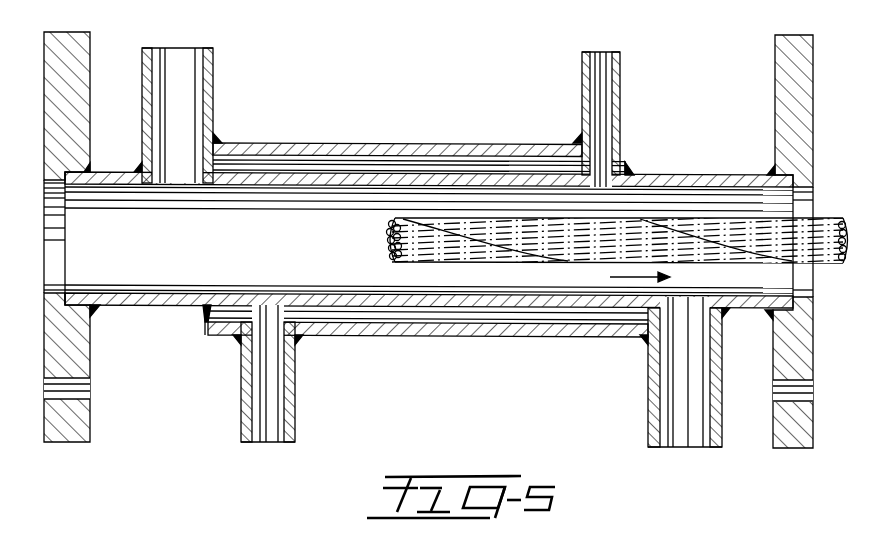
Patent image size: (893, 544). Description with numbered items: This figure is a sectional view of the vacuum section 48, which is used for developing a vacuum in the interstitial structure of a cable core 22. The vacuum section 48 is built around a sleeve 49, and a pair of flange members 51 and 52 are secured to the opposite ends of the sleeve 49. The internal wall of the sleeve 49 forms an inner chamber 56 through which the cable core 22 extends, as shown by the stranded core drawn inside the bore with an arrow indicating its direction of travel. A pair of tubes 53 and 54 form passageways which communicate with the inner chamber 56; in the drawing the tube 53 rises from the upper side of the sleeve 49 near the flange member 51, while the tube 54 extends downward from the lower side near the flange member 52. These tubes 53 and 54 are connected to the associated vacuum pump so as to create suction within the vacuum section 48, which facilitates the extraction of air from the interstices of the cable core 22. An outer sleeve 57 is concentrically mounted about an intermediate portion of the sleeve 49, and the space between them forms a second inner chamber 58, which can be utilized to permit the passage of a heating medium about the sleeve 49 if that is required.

The cable core 22 is at (817, 270).
The vacuum section 48 is at (818, 164).
The sleeve 49 is at (674, 180).
The flange member 51 is at (75, 72).
The flange member 52 is at (782, 143).
The tube 53 is at (208, 72).
The tube 54 is at (657, 423).
The inner chamber 56 is at (133, 275).
The outer sleeve 57 is at (337, 152).
The inner chamber 58 is at (458, 167).